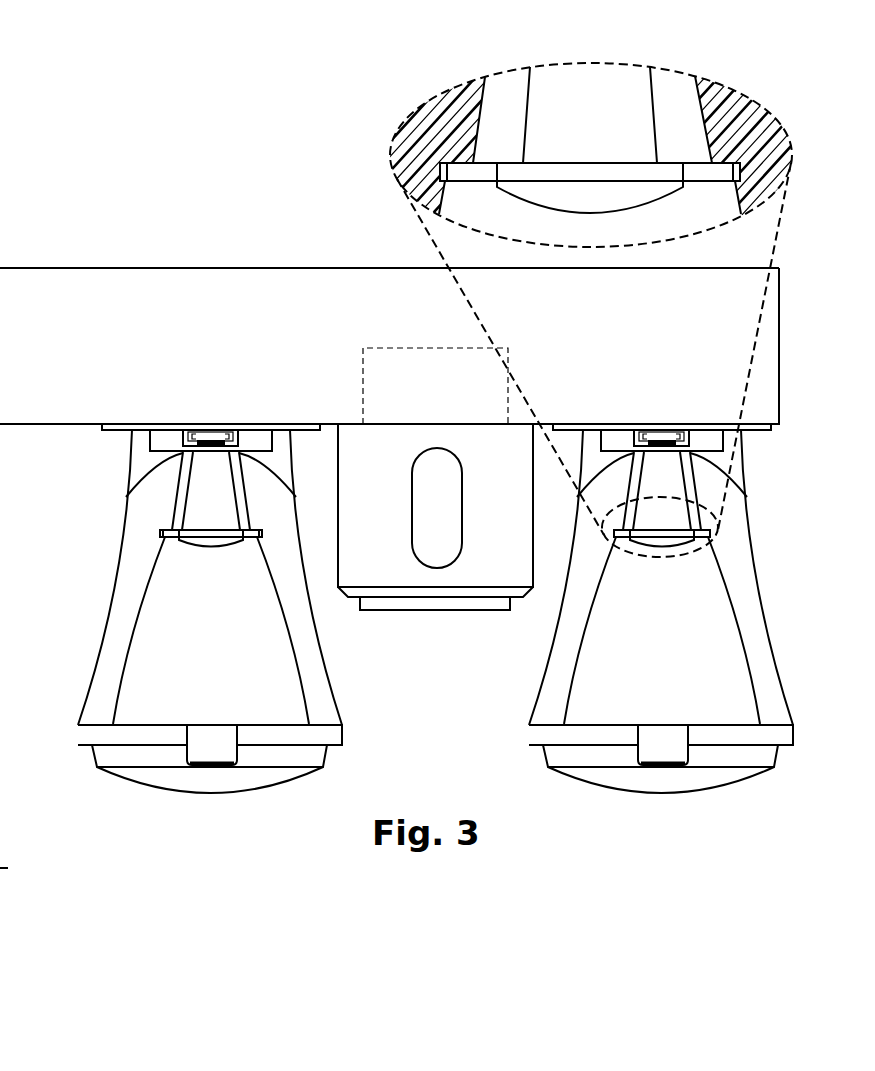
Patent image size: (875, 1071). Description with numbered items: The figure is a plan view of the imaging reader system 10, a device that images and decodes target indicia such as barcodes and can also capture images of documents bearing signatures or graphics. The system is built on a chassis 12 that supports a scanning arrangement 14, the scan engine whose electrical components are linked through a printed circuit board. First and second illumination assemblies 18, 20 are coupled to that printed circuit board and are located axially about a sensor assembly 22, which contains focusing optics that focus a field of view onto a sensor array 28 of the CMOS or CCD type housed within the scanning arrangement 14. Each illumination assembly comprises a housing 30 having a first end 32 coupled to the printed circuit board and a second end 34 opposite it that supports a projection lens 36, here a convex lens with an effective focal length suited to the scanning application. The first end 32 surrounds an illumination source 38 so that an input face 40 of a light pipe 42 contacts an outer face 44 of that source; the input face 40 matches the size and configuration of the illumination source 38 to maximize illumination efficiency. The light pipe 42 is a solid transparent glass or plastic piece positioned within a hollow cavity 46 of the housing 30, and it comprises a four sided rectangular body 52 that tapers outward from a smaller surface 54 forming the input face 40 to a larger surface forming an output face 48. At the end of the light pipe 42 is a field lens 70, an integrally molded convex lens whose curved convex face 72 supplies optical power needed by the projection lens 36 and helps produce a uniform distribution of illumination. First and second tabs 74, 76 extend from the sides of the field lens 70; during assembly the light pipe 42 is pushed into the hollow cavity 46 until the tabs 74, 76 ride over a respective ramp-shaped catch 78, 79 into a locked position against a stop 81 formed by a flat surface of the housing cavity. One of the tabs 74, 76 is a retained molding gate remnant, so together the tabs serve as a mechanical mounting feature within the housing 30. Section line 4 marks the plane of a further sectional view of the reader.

The section line 4- 4 is at (828, 868).
The imaging reader system 10 is at (808, 287).
The chassis 12 is at (762, 352).
The scanning arrangement 14 is at (283, 302).
The first illumination assembly 18 is at (797, 774).
The second illumination assembly 20 is at (140, 795).
The sensor assembly 22 is at (455, 628).
The sensor array 28 is at (437, 370).
The housing 30 is at (102, 678).
The first end 32 is at (132, 436).
The second end 34 is at (330, 733).
The projection lens 36 is at (223, 792).
The illumination source 38 is at (255, 442).
The input face 40 is at (135, 493).
The light pipe 42 is at (219, 526).
The outer face 44 is at (286, 489).
The hollow cavity 46 is at (187, 681).
The output face 48 is at (677, 528).
The four sided rectangular body 52 is at (668, 478).
The smaller surface 54 is at (210, 453).
The field lens 70 is at (210, 540).
The convex face 72 is at (230, 543).
The first tab 74 is at (258, 542).
The second tab 76 is at (172, 542).
The catch 78 is at (163, 540).
The catch 79 is at (262, 536).
The stop 81 is at (166, 531).